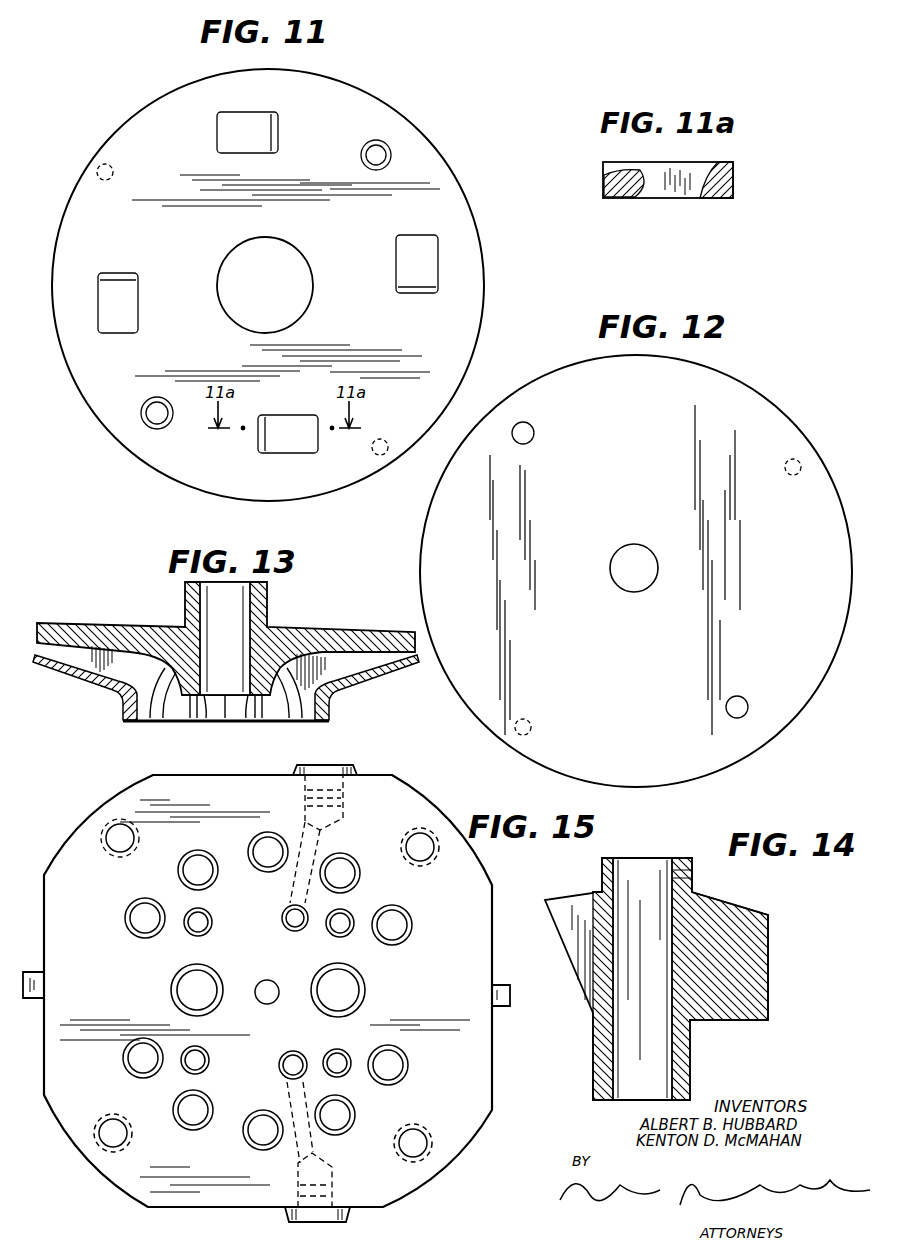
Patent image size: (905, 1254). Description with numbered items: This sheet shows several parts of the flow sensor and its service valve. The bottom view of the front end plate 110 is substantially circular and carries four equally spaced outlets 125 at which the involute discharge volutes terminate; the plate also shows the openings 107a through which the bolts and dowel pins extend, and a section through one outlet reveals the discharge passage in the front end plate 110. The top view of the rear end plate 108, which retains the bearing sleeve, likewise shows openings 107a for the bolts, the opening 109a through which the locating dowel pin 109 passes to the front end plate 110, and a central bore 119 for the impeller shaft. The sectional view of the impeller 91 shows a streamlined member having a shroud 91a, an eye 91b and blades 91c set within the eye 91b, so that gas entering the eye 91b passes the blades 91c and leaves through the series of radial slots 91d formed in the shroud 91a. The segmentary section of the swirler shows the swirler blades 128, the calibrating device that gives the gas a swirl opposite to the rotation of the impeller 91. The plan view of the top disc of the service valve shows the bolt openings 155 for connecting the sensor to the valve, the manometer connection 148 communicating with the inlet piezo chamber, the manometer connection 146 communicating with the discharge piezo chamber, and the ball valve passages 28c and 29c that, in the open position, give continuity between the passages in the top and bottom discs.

In FIG. 11, the front end plate 110 is at (438, 174).
In FIG. 11a, the front end plate 110 is at (733, 185).
In FIG. 11, the outlets 125 is at (240, 122).
In FIG. 11a, the outlets 125 is at (700, 170).
In FIG. 11, the openings 107a is at (152, 418).
In FIG. 12, the openings 107a is at (534, 434).
In FIG. 11, the opening 109a is at (104, 170).
In FIG. 12, the rear end plate 108 is at (776, 405).
In FIG. 12, the locating dowel pin 109 is at (802, 465).
In FIG. 12, the central hole 119 is at (638, 592).
In FIG. 13, the impeller 91 is at (325, 632).
In FIG. 13, the shroud 91a is at (95, 675).
In FIG. 13, the eye 91b is at (243, 715).
In FIG. 13, the blades 91c is at (218, 723).
In FIG. 13, the radial slots 91d is at (412, 670).
In FIG. 15, the manometer connection 148 is at (338, 765).
In FIG. 15, the manometer connection 146 is at (346, 1220).
In FIG. 15, the bolt openings 155 is at (108, 826).
In FIG. 15, the passage 29c is at (180, 990).
In FIG. 15, the cylindrical passage 28c is at (352, 997).
In FIG. 14, the swirler blades 128 is at (593, 1078).